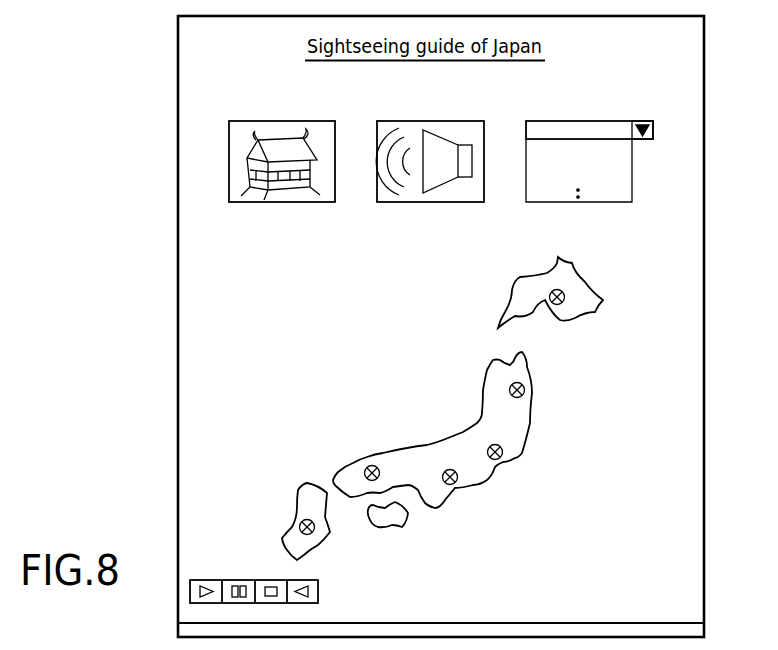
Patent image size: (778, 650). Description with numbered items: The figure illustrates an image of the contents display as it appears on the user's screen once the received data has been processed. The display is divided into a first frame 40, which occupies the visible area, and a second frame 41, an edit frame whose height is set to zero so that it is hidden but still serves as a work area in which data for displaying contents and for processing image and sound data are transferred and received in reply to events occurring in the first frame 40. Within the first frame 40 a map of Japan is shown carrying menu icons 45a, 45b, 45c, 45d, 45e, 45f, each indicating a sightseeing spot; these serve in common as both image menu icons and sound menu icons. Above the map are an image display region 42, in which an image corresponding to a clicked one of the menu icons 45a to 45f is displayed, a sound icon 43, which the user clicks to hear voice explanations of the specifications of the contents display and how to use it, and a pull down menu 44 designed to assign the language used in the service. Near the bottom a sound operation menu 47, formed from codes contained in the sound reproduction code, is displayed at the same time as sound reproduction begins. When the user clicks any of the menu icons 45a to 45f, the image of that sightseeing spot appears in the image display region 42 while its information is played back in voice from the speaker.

The first frame 40 is at (697, 184).
The second frame 41 is at (697, 630).
The image display region 42 is at (288, 121).
The sound icon 43 is at (432, 121).
The pull down menu 44 is at (579, 121).
The menu icon 45a is at (563, 304).
The menu icon 45b is at (525, 392).
The menu icon 45c is at (501, 457).
The menu icon 45d is at (452, 485).
The menu icon 45e is at (372, 465).
The menu icon 45f is at (313, 534).
The sound operation menu 47 is at (320, 592).